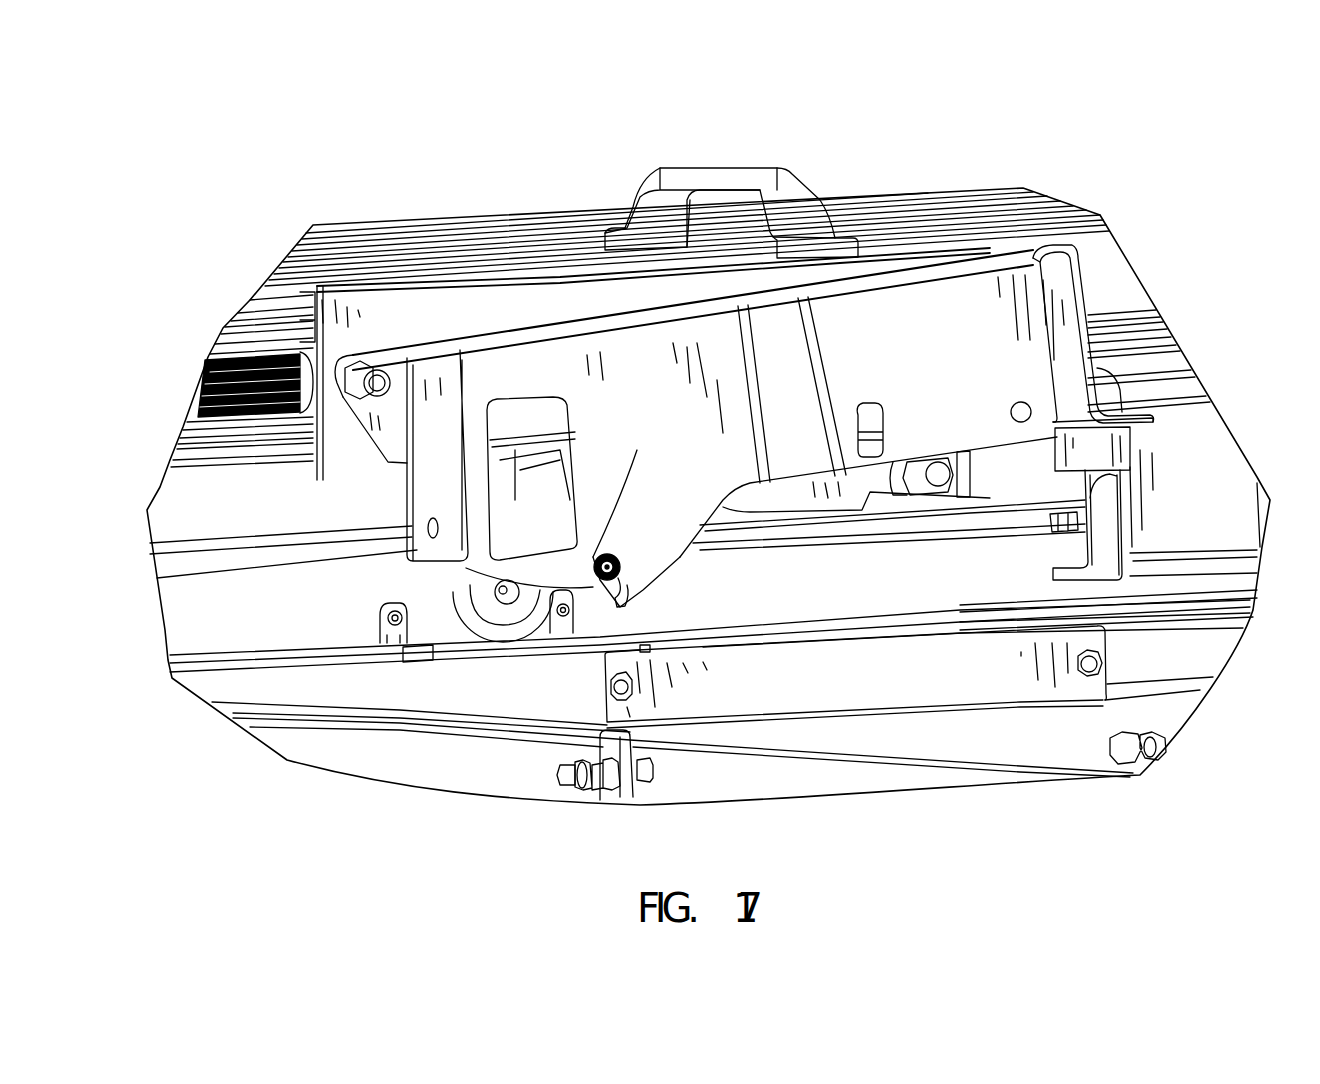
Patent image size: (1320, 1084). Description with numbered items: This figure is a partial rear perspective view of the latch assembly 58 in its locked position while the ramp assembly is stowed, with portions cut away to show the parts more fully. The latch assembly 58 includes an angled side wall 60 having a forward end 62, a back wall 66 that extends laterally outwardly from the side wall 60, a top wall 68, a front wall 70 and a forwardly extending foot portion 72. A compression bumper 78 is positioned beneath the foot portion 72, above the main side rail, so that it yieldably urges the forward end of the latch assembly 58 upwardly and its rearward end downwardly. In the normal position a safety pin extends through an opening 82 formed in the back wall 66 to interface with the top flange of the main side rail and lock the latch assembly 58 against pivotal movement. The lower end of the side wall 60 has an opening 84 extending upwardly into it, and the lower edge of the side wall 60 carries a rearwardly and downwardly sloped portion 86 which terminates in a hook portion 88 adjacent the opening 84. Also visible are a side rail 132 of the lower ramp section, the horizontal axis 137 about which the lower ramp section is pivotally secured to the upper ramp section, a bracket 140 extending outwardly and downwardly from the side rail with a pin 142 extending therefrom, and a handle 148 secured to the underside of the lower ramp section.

The side rail 132 is at (348, 225).
The top wall 68 is at (505, 340).
The handle 148 is at (715, 178).
The latch assembly 58 is at (767, 335).
The angled side wall 60 is at (790, 404).
The front wall 70 is at (1062, 303).
The forward end 62 is at (1053, 367).
The foot portion 72 is at (1125, 414).
The compression bumper 78 is at (1100, 453).
The back wall 66 is at (446, 466).
The opening 82 is at (430, 530).
The horizontal axis 137 is at (340, 392).
The bracket 140 is at (552, 505).
The opening 84 is at (600, 556).
The hook portion 88 is at (625, 603).
The pin 142 is at (622, 568).
The rearwardly and downwardly sloped portion 86 is at (697, 540).